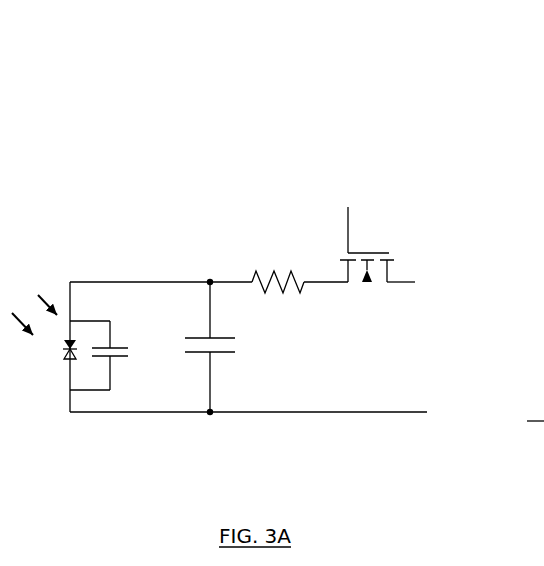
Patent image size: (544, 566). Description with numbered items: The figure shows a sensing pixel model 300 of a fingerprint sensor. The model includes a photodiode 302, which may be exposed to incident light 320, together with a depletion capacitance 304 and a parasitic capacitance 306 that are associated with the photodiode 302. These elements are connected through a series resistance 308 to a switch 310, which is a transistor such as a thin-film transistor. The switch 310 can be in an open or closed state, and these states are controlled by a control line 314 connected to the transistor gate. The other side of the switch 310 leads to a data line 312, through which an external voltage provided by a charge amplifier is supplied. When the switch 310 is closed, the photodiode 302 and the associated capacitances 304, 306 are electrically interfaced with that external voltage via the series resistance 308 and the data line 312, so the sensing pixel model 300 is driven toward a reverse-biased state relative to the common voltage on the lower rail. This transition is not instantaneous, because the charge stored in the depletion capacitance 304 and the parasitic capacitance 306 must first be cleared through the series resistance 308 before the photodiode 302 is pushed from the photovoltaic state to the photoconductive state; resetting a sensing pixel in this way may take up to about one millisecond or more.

The sensing pixel model 300 is at (242, 96).
The photodiode 302 is at (75, 346).
The depletion capacitance 304 is at (118, 346).
The parasitic capacitance 306 is at (219, 352).
The series resistance 308 is at (292, 272).
The switch 310 is at (379, 253).
The data line 312 is at (406, 282).
The control line 314 is at (347, 233).
The incident light 320 is at (38, 295).